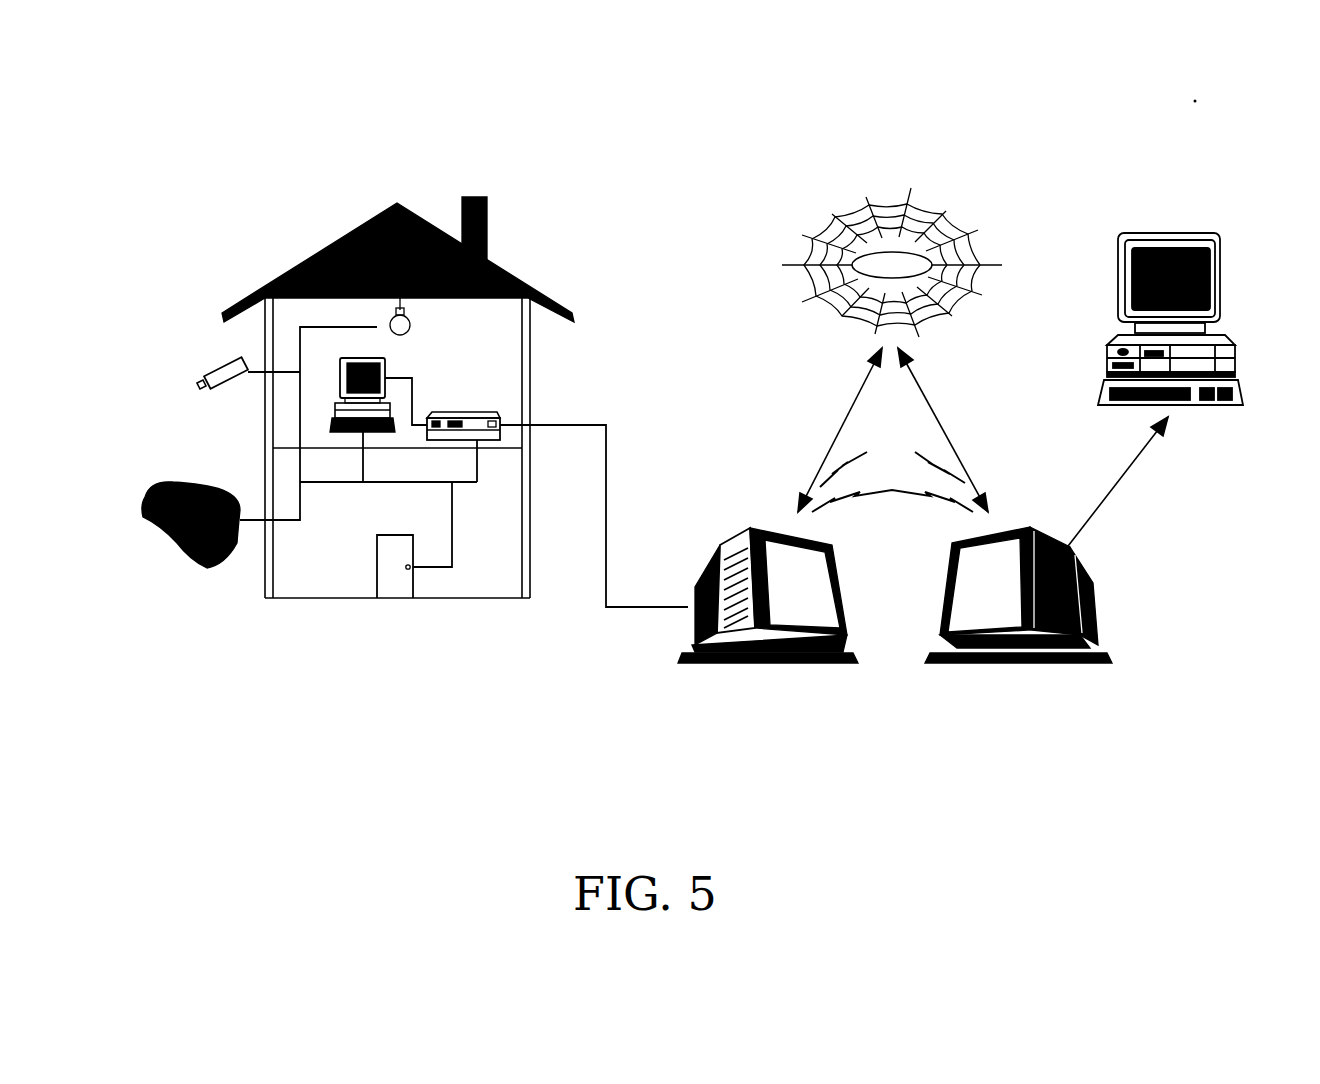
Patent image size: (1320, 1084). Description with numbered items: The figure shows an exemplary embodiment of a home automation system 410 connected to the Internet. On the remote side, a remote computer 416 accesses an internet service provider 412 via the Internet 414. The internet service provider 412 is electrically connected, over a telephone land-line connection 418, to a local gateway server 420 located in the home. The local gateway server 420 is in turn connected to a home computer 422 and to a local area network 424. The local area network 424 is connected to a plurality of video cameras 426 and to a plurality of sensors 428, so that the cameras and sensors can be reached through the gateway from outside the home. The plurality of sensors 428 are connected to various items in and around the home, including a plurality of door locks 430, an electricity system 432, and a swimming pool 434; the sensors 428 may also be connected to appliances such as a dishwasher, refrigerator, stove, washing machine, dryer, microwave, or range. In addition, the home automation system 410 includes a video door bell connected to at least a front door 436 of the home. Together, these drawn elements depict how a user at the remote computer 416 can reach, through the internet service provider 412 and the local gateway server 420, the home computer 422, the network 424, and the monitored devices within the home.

The home automation system 410 is at (672, 148).
The internet service provider 412 is at (750, 530).
The Internet 414 is at (840, 222).
The remote computer 416 is at (1050, 533).
The telephone land-line connection 418 is at (622, 608).
The local gateway server 420 is at (487, 397).
The home computer 422 is at (385, 358).
The local area network 424 is at (473, 485).
The video cameras 426 is at (222, 365).
The sensors 428 is at (393, 318).
The door locks 430 is at (407, 572).
The electricity system 432 is at (407, 307).
The swimming pool 434 is at (188, 567).
The front door 436 is at (383, 556).